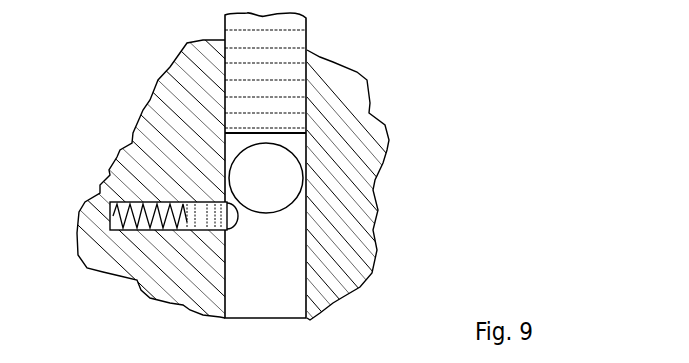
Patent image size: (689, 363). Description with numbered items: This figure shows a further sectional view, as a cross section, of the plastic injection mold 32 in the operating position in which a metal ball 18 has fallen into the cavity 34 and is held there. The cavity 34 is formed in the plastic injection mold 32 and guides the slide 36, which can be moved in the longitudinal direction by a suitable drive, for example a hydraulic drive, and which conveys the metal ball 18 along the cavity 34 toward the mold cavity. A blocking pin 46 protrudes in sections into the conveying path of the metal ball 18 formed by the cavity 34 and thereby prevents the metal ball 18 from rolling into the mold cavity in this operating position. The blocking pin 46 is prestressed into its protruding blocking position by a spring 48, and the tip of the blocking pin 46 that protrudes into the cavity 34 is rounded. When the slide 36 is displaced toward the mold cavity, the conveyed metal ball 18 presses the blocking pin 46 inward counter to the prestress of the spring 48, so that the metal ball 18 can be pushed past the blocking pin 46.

The metal ball 18 is at (280, 178).
The plastic injection mold 32 is at (363, 155).
The cavity 34 is at (287, 265).
The slide 36 is at (280, 47).
The blocking pin 46 is at (209, 198).
The spring 48 is at (117, 197).